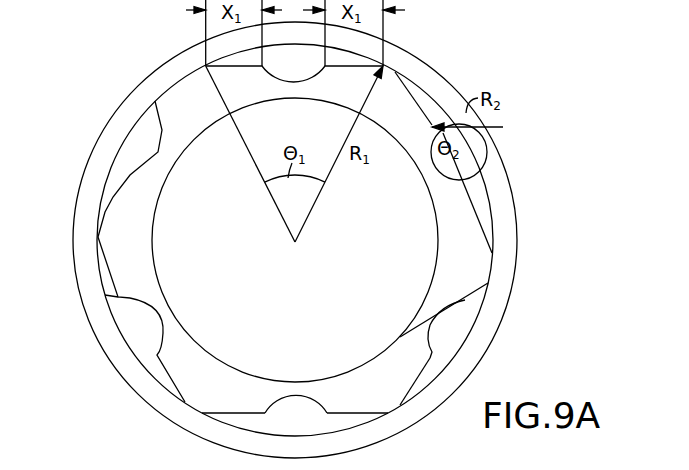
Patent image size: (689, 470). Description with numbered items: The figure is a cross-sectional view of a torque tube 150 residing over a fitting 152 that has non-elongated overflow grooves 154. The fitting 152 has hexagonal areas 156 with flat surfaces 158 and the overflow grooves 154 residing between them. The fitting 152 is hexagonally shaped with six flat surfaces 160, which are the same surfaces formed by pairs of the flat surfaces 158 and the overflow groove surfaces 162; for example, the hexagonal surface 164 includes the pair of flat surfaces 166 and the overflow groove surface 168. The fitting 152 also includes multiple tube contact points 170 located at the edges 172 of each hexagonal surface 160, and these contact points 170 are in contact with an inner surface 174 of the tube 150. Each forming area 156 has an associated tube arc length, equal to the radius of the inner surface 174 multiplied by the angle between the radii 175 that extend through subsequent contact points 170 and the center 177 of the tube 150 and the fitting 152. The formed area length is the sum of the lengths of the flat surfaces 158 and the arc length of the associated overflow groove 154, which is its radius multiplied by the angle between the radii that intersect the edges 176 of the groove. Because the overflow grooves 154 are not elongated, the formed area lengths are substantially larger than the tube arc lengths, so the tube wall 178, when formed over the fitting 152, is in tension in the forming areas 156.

The torque tube 150 is at (435, 70).
The fitting 152 is at (157, 277).
The overflow grooves 154 is at (309, 398).
The hexagonal areas 156 is at (130, 152).
The flat surfaces 158 is at (115, 197).
The flat surfaces 160 is at (135, 173).
The overflow groove surfaces 162 is at (160, 155).
The hexagonal surface 164 is at (264, 416).
The flat surfaces 166 is at (235, 415).
The overflow groove surface 168 is at (300, 404).
The tube contact points 170 is at (492, 252).
The edges 172 is at (492, 252).
The inner surface 174 is at (476, 316).
The radii 175 is at (348, 135).
The edges 176 is at (433, 189).
The center 177 is at (297, 240).
The tube wall 178 is at (486, 323).